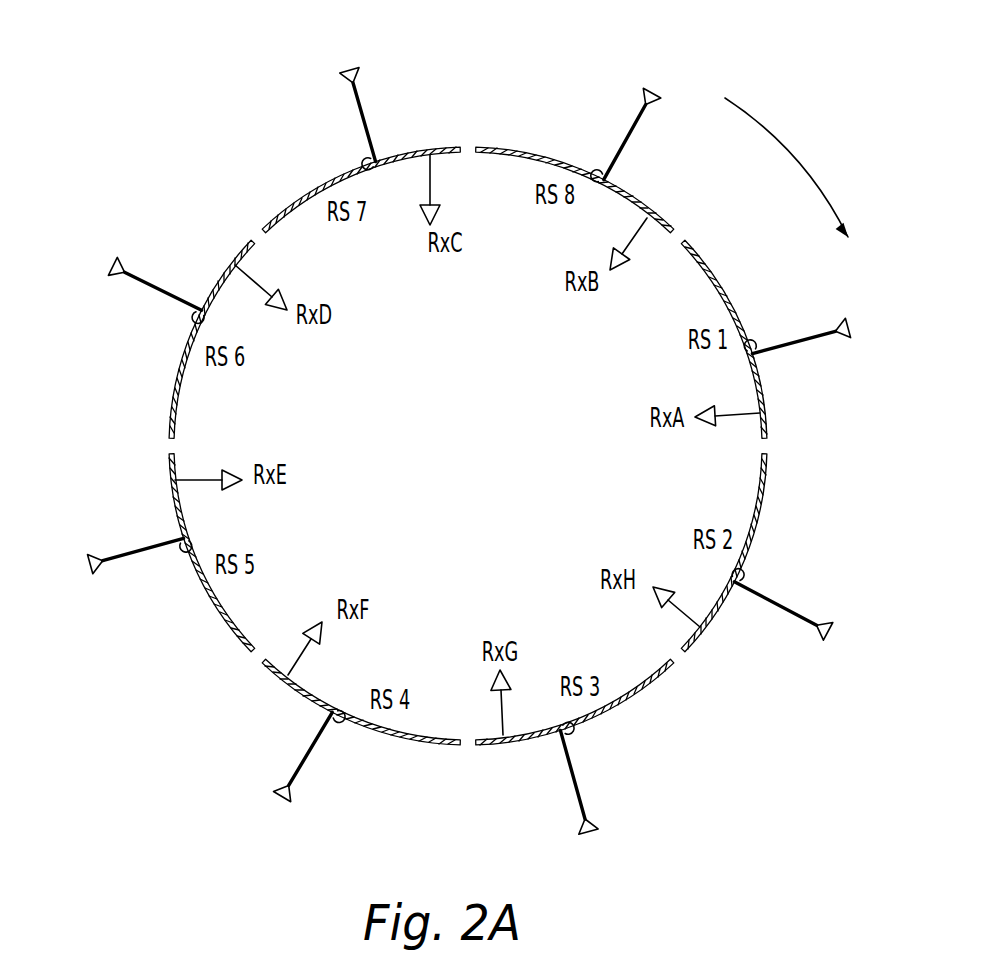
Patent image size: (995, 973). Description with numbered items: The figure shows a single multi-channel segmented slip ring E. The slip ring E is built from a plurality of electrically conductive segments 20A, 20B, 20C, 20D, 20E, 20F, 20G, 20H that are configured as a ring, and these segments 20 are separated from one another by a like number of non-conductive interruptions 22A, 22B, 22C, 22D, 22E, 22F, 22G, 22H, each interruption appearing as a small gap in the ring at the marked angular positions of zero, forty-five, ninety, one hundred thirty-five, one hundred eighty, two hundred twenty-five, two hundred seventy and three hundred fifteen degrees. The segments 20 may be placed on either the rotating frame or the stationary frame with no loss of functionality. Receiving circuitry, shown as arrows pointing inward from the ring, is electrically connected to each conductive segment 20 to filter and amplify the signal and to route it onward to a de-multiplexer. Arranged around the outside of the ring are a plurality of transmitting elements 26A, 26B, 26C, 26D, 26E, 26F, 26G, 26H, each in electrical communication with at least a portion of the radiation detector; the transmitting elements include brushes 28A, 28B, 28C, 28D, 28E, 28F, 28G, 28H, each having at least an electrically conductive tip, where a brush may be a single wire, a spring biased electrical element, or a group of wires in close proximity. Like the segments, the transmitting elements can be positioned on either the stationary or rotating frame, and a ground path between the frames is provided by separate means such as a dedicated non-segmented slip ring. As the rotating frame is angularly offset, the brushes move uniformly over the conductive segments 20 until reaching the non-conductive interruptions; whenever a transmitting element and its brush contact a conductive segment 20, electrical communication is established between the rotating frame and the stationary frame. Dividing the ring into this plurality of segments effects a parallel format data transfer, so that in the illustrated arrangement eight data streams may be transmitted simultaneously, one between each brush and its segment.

The segmented slip ring E is at (188, 103).
The electrically conductive segments 20 is at (282, 210).
The electrically conductive segment 20A is at (727, 297).
The electrically conductive segment 20B is at (518, 152).
The electrically conductive segment 20C is at (343, 177).
The electrically conductive segment 20D is at (180, 360).
The electrically conductive segment 20E is at (207, 600).
The electrically conductive segment 20F is at (403, 740).
The electrically conductive segment 20G is at (615, 708).
The electrically conductive segment 20H is at (762, 532).
The non-conductive interruption 22A is at (672, 247).
The non-conductive interruption 22B is at (466, 165).
The non-conductive interruption 22C is at (263, 245).
The non-conductive interruption 22D is at (178, 446).
The non-conductive interruption 22E is at (265, 647).
The non-conductive interruption 22F is at (467, 735).
The non-conductive interruption 22G is at (670, 648).
The non-conductive interruption 22H is at (757, 448).
The transmitting element 26A is at (818, 328).
The transmitting element 26B is at (630, 117).
The transmitting element 26C is at (350, 102).
The transmitting element 26D is at (157, 293).
The transmitting element 26E is at (120, 563).
The transmitting element 26F is at (310, 783).
The transmitting element 26G is at (596, 797).
The transmitting element 26H is at (785, 598).
The brush 28A is at (803, 337).
The brush 28B is at (630, 137).
The brush 28C is at (363, 117).
The brush 28D is at (152, 284).
The brush 28E is at (148, 550).
The brush 28F is at (303, 755).
The brush 28G is at (568, 770).
The brush 28H is at (780, 613).